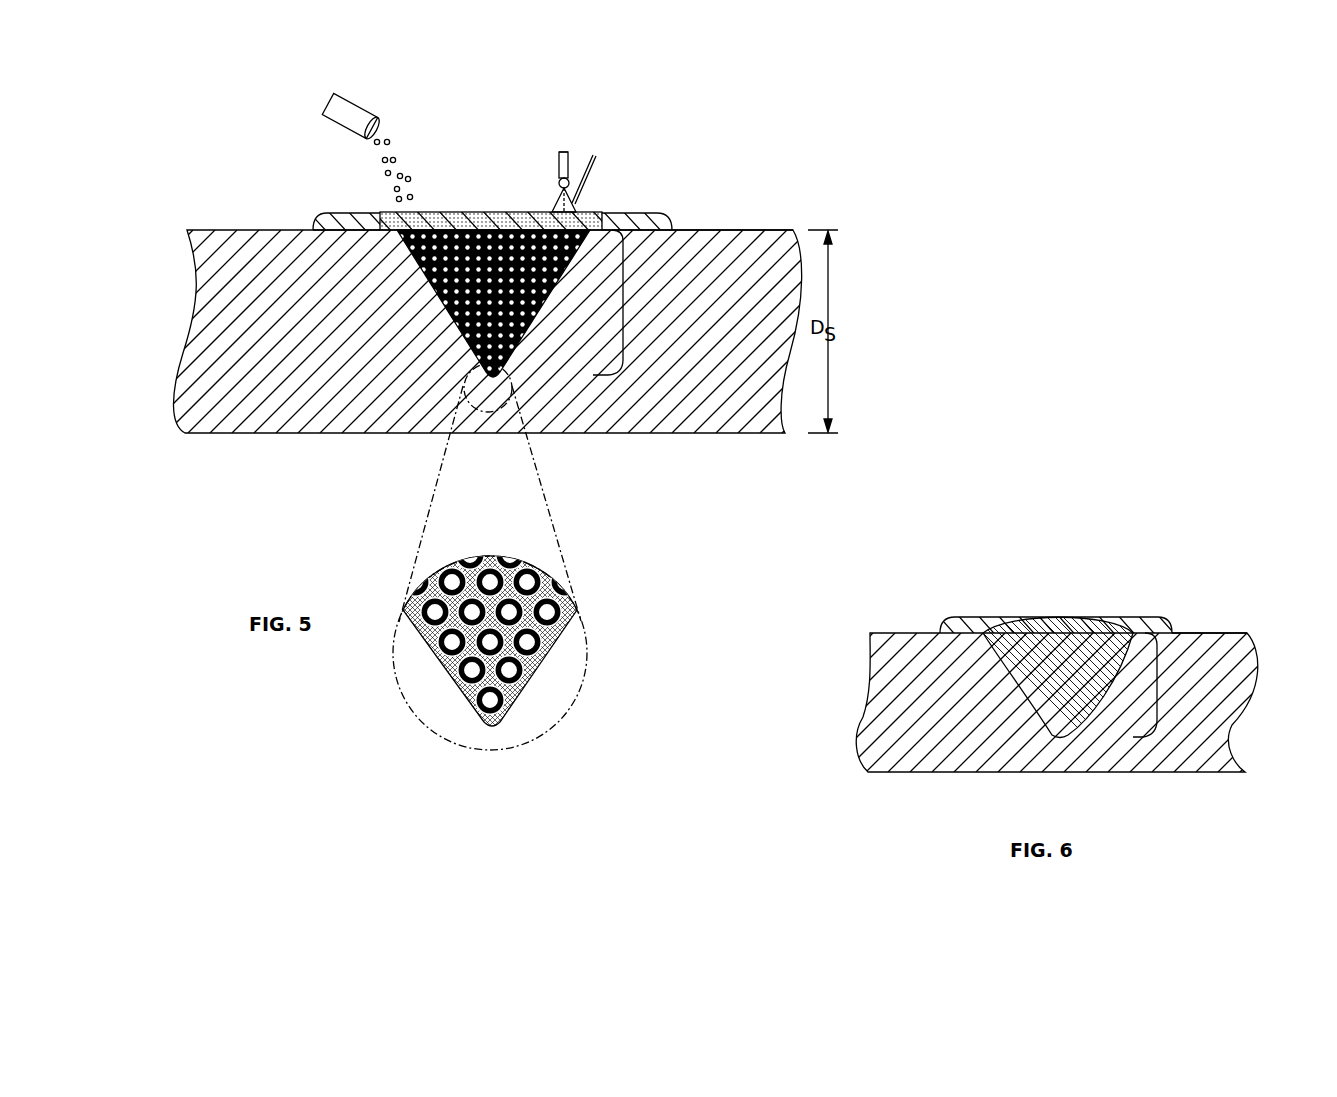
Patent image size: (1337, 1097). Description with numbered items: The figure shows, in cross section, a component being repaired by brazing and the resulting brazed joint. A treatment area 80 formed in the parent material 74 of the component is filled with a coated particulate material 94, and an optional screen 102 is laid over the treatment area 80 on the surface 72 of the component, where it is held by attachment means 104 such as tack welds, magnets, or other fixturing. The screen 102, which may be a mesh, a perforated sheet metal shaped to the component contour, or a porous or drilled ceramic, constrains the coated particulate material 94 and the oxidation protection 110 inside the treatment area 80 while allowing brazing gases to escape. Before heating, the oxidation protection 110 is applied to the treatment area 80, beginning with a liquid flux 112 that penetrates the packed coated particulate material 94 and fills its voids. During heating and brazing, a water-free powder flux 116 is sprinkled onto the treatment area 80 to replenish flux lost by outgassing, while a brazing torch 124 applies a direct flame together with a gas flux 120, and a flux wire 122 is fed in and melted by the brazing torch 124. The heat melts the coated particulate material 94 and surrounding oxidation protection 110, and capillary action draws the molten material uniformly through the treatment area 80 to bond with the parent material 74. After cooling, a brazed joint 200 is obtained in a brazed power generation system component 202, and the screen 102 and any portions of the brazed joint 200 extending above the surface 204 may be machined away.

In FIG. 5, the surface 72 is at (720, 230).
In FIG. 5, the parent material 74 is at (300, 323).
In FIG. 6, the parent material 74 is at (940, 702).
In FIG. 5, the treatment area 80 is at (625, 300).
In FIG. 6, the treatment area 80 is at (1163, 682).
In FIG. 5, the coated particulate material 94 is at (457, 321).
In FIG. 5, the screen 102 is at (622, 215).
In FIG. 6, the screen 102 is at (985, 620).
In FIG. 5, the attachment means 104 is at (317, 208).
In FIG. 5, the oxidation protection 110 is at (477, 211).
In FIG. 5, the liquid flux 112 is at (562, 637).
In FIG. 5, the powder flux 116 is at (407, 164).
In FIG. 5, the gas flux 120 is at (556, 198).
In FIG. 5, the flux wire 122 is at (595, 156).
In FIG. 5, the brazing torch 124 is at (567, 152).
In FIG. 6, the brazed joint 200 is at (1085, 625).
In FIG. 6, the brazed power generation system component 202 is at (1190, 556).
In FIG. 6, the surface 204 is at (1200, 633).